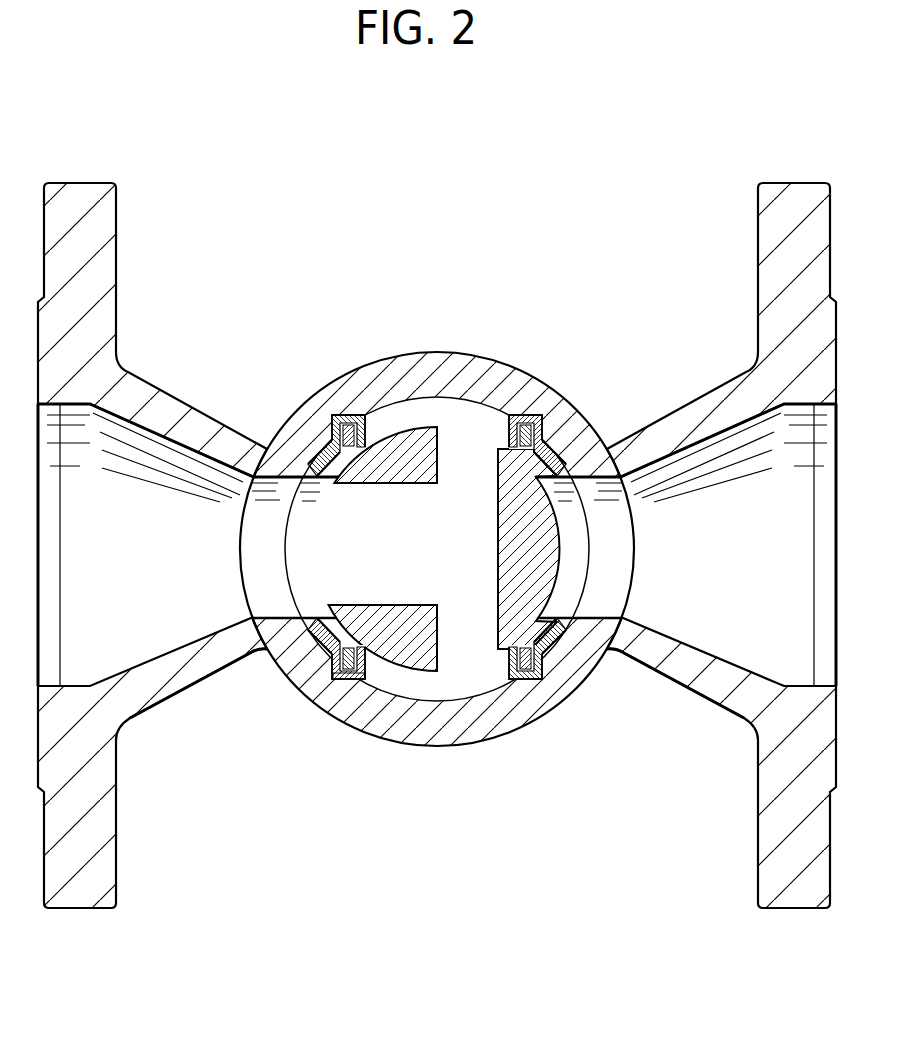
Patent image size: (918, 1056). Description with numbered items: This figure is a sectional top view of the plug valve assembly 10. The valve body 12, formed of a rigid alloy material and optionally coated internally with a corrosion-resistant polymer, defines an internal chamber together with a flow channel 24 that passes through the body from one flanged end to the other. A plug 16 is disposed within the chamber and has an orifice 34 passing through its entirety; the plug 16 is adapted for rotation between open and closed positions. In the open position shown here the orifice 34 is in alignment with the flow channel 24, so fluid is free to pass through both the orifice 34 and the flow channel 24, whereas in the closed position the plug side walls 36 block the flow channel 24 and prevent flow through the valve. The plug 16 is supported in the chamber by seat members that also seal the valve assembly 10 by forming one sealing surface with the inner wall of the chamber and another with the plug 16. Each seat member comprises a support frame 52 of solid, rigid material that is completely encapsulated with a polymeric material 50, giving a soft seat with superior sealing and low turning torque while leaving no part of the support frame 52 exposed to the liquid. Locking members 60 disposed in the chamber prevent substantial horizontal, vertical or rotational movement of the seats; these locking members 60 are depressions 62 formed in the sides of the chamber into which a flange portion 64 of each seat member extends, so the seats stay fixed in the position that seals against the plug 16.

The plug valve assembly 10 is at (244, 261).
The valve body 12 is at (775, 241).
The plug 16 is at (476, 549).
The flow channel 24 is at (163, 547).
The orifice 34 is at (389, 577).
The plug side walls 36 is at (558, 552).
The polymeric material 50 is at (545, 430).
The support frame 52 is at (548, 667).
The locking members 60 is at (350, 694).
The depressions 62 is at (357, 412).
The flange portion 64 is at (330, 682).